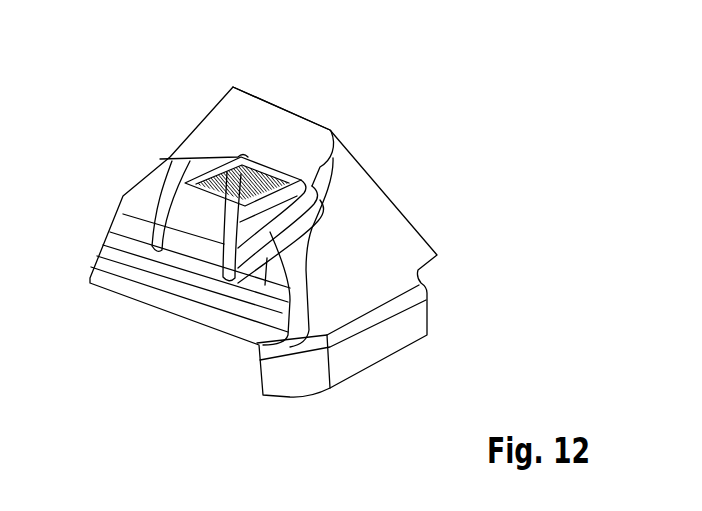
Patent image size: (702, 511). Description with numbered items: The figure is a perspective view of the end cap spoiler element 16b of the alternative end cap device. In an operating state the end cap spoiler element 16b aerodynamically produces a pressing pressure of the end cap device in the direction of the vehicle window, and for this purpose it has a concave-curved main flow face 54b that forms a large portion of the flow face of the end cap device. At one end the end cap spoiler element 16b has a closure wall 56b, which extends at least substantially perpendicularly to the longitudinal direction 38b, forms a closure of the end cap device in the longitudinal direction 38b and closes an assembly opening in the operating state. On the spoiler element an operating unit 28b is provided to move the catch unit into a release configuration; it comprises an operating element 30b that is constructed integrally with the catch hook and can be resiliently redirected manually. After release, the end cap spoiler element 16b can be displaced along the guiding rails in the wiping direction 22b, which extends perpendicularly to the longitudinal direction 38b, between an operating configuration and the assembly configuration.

The end cap spoiler element 16b is at (358, 219).
The main flow face 54b is at (256, 139).
The operating element 30b is at (200, 157).
The operating unit 28b is at (283, 168).
The closure wall 56b is at (363, 355).
The longitudinal direction 38b is at (137, 342).
The wiping direction 22b is at (200, 376).